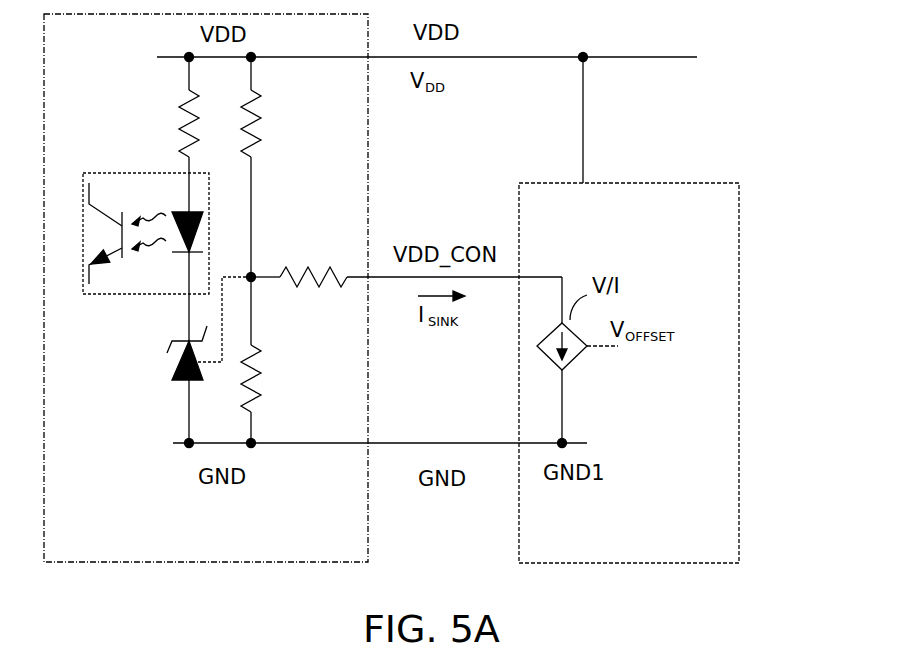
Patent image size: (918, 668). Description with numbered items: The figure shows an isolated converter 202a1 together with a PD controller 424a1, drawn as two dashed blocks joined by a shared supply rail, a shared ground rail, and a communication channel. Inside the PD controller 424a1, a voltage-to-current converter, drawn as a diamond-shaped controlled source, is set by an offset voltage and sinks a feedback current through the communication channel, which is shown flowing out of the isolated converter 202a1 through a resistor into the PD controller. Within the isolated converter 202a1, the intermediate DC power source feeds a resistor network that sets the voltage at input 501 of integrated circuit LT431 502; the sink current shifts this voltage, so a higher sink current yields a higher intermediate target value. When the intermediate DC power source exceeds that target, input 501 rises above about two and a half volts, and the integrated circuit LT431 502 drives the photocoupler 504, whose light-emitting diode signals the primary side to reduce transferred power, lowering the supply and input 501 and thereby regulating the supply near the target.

The isolated converter 202a1 is at (122, 116).
The PD controller 424a1 is at (620, 238).
The input 501 is at (268, 275).
The integrated circuit LT431 502 is at (172, 363).
The photocoupler 504 is at (137, 295).